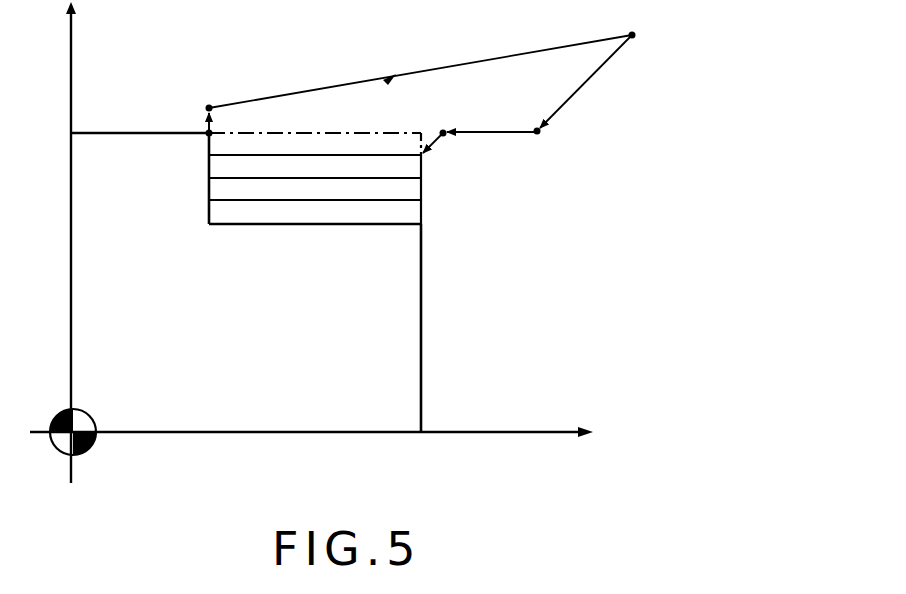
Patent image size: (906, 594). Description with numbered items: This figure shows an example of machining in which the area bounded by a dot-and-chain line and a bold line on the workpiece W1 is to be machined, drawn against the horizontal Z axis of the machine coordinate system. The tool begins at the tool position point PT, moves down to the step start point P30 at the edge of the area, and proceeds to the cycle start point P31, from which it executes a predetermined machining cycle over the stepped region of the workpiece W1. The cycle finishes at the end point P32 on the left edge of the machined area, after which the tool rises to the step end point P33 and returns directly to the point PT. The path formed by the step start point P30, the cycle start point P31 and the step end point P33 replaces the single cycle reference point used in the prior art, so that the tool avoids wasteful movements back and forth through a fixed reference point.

The tool position point PT is at (428, 58).
The step start point P30 is at (580, 100).
The cycle start point P31 is at (480, 129).
The end point P32 is at (186, 123).
The step end point P33 is at (217, 107).
The workpiece W1 is at (422, 345).
The Z axis Z is at (322, 433).